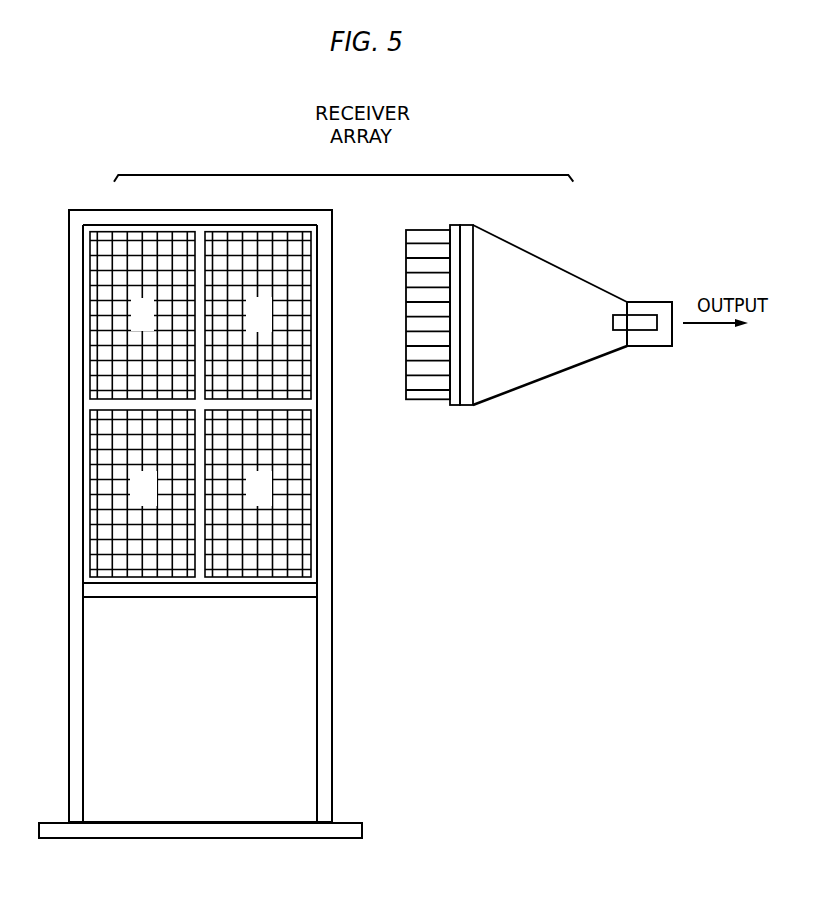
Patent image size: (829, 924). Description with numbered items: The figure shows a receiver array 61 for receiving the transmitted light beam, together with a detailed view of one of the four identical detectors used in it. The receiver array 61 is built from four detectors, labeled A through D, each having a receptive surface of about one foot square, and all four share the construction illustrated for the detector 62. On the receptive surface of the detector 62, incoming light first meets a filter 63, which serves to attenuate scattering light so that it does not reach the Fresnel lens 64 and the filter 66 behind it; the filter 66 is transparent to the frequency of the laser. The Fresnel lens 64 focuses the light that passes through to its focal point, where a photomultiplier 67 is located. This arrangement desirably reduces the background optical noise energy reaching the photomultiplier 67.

The receiver array 61 is at (202, 598).
The detector 62 is at (540, 326).
The filter 63 is at (418, 400).
The Fresnel lens 64 is at (455, 405).
The filter 66 is at (467, 405).
The photomultiplier 67 is at (621, 330).